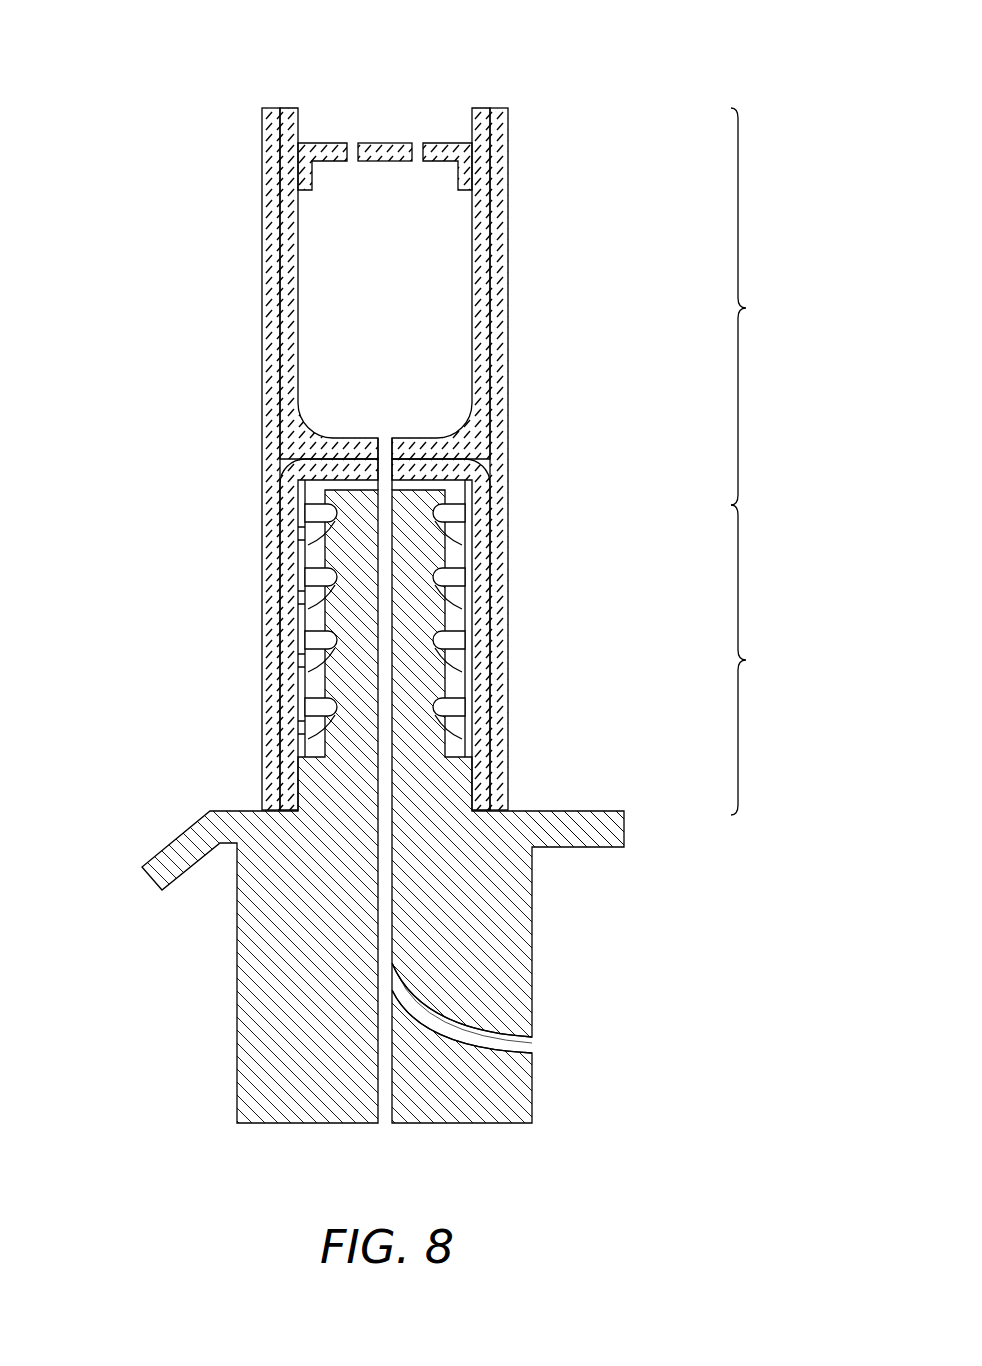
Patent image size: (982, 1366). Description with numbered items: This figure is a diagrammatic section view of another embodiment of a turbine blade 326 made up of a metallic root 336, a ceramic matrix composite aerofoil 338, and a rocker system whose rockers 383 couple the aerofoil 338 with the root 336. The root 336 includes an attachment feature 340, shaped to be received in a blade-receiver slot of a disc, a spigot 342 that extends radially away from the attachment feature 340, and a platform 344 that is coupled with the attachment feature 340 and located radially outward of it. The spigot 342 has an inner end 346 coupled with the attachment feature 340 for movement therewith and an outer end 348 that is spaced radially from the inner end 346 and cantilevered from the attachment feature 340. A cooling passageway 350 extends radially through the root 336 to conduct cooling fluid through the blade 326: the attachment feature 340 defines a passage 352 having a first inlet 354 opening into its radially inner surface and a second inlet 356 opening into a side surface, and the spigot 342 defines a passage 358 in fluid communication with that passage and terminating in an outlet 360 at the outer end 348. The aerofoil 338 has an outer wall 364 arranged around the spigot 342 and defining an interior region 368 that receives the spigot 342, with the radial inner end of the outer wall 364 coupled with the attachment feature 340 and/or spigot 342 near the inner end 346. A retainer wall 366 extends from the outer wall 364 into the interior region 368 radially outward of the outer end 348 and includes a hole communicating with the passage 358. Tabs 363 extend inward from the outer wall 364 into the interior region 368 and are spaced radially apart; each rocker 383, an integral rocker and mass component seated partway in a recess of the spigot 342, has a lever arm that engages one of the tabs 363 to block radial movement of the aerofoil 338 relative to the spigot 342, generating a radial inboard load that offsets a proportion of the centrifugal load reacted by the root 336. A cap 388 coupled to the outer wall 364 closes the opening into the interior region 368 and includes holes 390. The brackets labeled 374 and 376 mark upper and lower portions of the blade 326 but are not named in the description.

The blade 326 is at (151, 108).
The root 336 is at (177, 990).
The aerofoil 338 is at (299, 459).
The attachment feature 340 is at (540, 975).
The spigot 342 is at (445, 628).
The platform 344 is at (608, 808).
The inner end 346 is at (448, 747).
The outer end 348 is at (447, 508).
The cooling passageway 350 is at (383, 907).
The passage 352 is at (385, 1023).
The first inlet 354 is at (388, 1137).
The second inlet 356 is at (540, 1047).
The passage 358 is at (385, 640).
The outlet 360 is at (383, 450).
The tabs 363 is at (317, 532).
The outer wall 364 is at (257, 294).
The retainer wall 366 is at (428, 432).
The interior region 368 is at (323, 667).
The lower section 374 is at (775, 660).
The upper section 376 is at (775, 306).
The rockers 383 is at (322, 630).
The cap 388 is at (442, 133).
The holes 390 is at (348, 133).